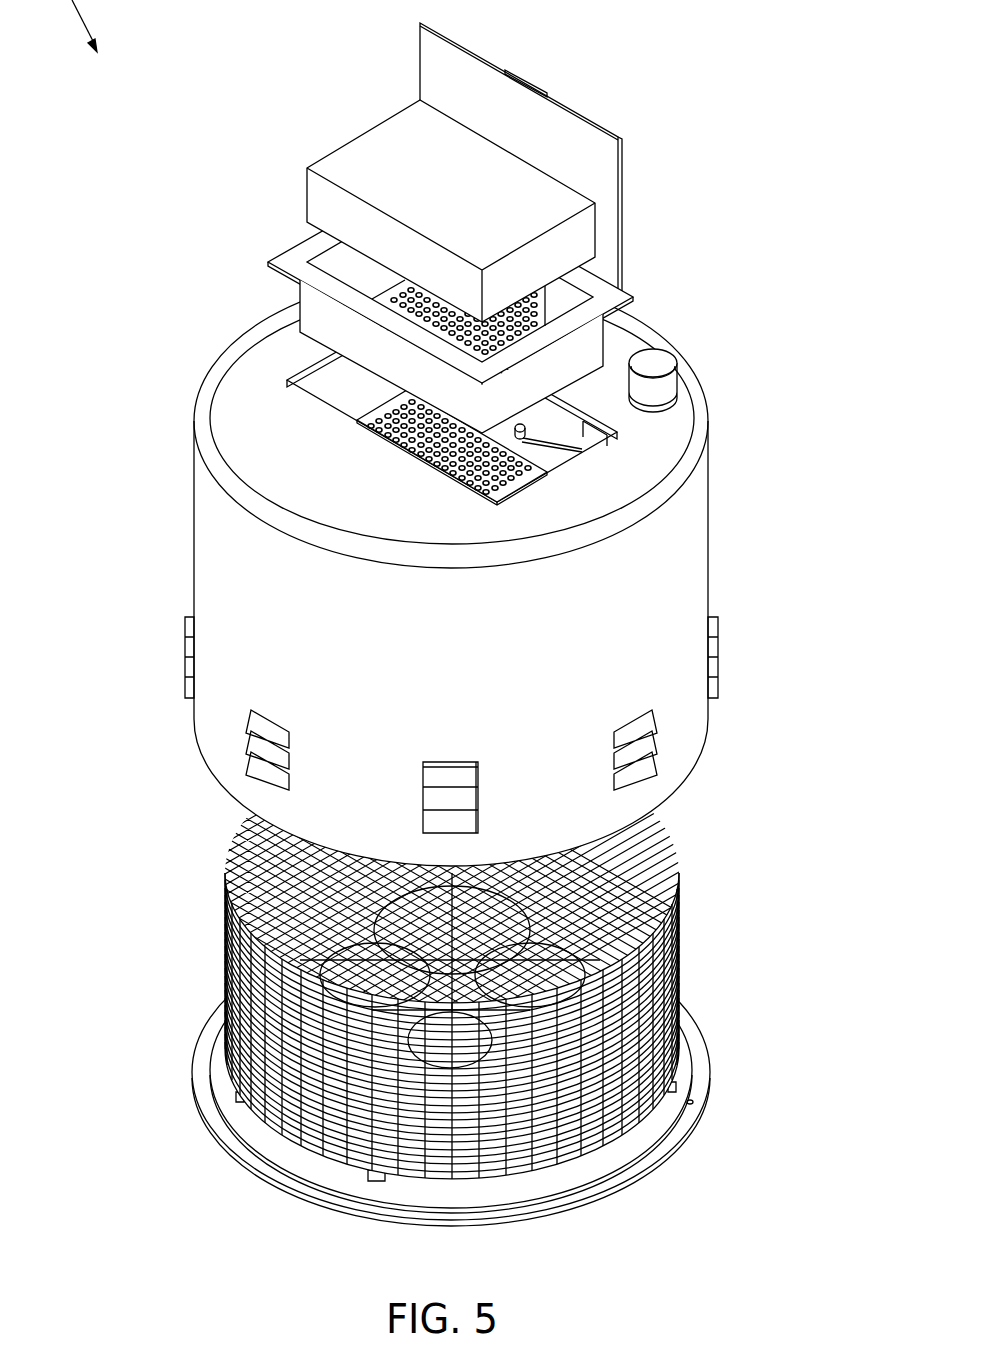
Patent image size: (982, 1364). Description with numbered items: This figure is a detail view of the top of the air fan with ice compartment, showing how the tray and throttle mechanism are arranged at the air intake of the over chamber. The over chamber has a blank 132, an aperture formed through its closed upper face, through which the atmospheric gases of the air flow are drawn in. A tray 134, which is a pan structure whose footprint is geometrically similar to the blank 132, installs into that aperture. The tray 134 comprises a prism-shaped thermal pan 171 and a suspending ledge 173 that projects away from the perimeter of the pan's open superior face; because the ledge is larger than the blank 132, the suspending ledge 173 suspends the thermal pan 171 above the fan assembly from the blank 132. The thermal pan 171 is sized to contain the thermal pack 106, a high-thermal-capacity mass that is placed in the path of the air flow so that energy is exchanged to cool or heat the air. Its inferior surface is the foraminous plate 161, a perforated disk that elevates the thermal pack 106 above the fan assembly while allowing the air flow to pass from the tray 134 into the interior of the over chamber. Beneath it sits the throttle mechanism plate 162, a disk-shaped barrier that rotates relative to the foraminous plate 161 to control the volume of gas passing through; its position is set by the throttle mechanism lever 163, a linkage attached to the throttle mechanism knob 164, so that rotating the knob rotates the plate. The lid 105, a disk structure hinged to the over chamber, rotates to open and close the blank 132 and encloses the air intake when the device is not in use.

The lid 105 is at (592, 160).
The thermal pack 106 is at (368, 128).
The blank 132 is at (328, 405).
The tray 134 is at (260, 342).
The foraminous plate 161 is at (325, 345).
The throttle mechanism plate 162 is at (547, 467).
The throttle mechanism lever 163 is at (615, 421).
The throttle mechanism knob 164 is at (668, 345).
The thermal pan 171 is at (317, 300).
The suspending ledge 173 is at (285, 258).